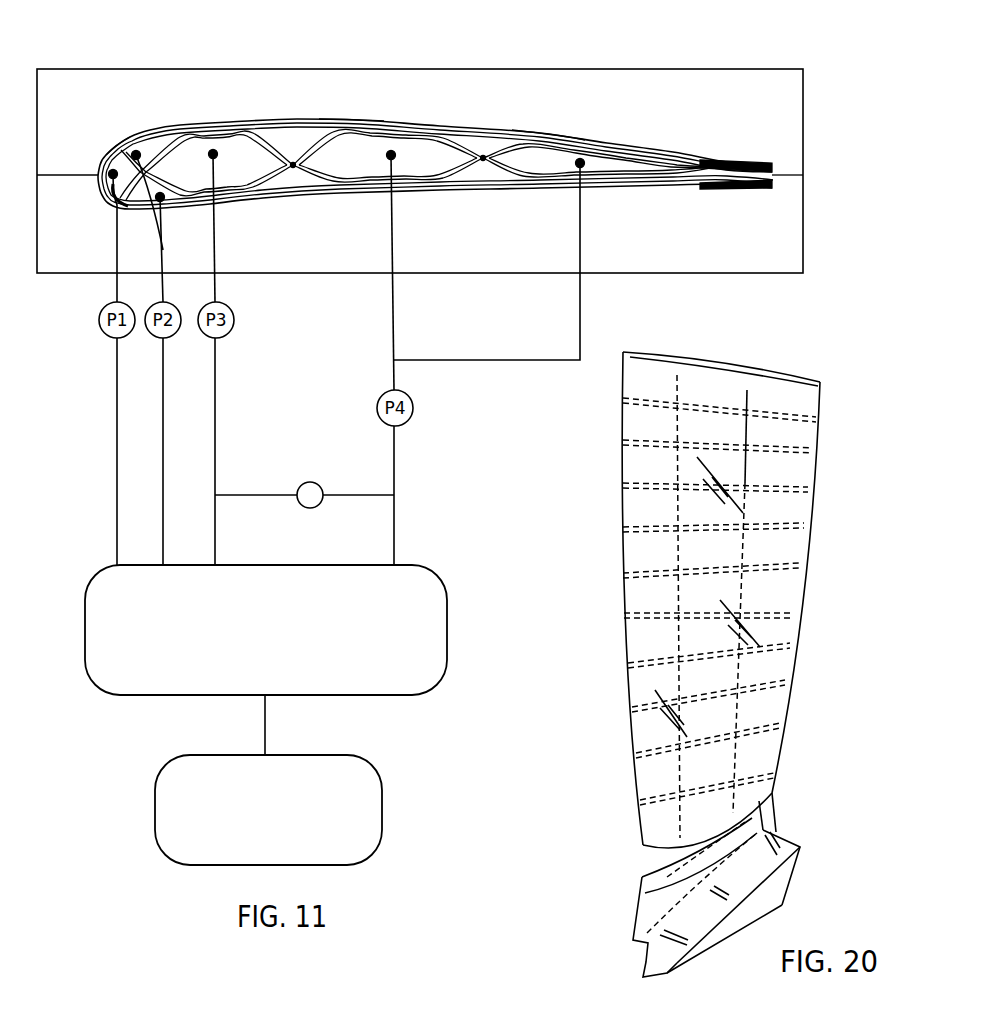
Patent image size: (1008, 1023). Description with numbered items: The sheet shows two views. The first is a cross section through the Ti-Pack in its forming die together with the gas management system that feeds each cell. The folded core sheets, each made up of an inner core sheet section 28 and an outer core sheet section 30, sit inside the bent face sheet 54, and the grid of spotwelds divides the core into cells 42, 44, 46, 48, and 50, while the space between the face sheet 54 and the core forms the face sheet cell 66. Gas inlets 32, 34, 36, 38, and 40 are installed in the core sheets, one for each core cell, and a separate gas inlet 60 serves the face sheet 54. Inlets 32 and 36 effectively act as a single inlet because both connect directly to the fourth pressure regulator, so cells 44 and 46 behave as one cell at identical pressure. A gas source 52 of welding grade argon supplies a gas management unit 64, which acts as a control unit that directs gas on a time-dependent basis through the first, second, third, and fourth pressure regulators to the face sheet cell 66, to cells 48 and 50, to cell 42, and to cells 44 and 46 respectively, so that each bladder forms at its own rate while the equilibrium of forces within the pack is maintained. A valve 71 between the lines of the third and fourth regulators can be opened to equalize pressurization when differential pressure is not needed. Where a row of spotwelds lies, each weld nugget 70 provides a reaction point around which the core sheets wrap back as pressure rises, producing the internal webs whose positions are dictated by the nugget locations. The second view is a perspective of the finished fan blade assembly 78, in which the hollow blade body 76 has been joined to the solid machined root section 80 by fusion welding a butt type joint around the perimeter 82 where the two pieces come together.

In FIG. 11, the inner core sheet section 28 is at (224, 128).
In FIG. 11, the outer core sheet section 30 is at (532, 137).
In FIG. 11, the gas inlet 32 is at (392, 222).
In FIG. 11, the gas inlet 34 is at (222, 234).
In FIG. 11, the gas inlet 36 is at (583, 229).
In FIG. 11, the gas inlet 38 is at (158, 238).
In FIG. 11, the gas inlet 40 is at (157, 224).
In FIG. 11, the cell 42 is at (245, 153).
In FIG. 11, the cell 44 is at (427, 147).
In FIG. 11, the cell 46 is at (620, 167).
In FIG. 11, the cell 48 is at (115, 203).
In FIG. 11, the cell 50 is at (147, 146).
In FIG. 11, the gas source 52 is at (368, 792).
In FIG. 11, the face sheet 54 is at (352, 127).
In FIG. 11, the gas inlet 60 is at (114, 290).
In FIG. 11, the gas management unit 64 is at (436, 609).
In FIG. 11, the face sheet cell 66 is at (106, 156).
In FIG. 11, the weld nugget 70 is at (295, 170).
In FIG. 11, the valve 71 is at (310, 482).
In FIG. 20, the hollow blade body 76 is at (807, 550).
In FIG. 20, the fan blade assembly 78 is at (806, 360).
In FIG. 20, the root section 80 is at (785, 873).
In FIG. 20, the perimeter 82 is at (767, 814).